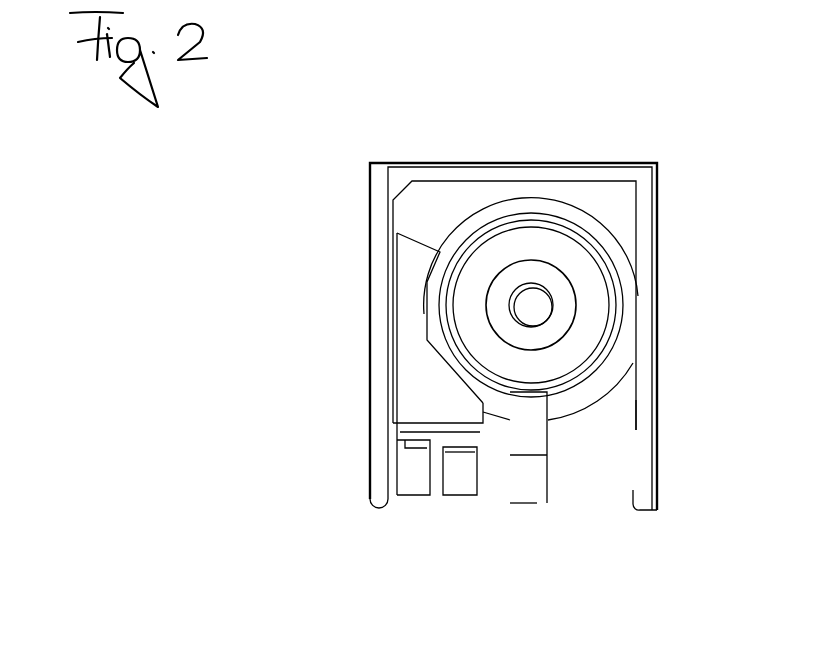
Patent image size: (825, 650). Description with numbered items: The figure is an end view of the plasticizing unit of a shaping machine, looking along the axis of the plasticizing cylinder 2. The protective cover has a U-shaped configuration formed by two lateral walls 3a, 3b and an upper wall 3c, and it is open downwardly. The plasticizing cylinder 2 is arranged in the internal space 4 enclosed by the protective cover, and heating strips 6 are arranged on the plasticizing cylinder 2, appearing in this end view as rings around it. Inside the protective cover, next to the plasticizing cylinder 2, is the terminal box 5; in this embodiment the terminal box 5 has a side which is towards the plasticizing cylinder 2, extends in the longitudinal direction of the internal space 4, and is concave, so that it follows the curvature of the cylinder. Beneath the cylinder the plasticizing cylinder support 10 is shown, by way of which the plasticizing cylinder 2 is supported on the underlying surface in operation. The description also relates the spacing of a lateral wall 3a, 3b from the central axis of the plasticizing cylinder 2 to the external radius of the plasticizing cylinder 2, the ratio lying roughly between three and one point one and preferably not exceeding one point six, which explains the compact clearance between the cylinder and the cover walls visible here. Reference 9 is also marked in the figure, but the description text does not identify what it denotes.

The plasticizing cylinder 2 is at (717, 312).
The lateral wall 3a is at (373, 277).
The lateral wall 3b is at (745, 185).
The upper wall 3c is at (493, 165).
The internal space 4 is at (733, 428).
The terminal box 5 is at (405, 338).
The heating strips 6 is at (585, 220).
The sealing ring 9 is at (453, 370).
The plasticizing cylinder support 10 is at (547, 508).